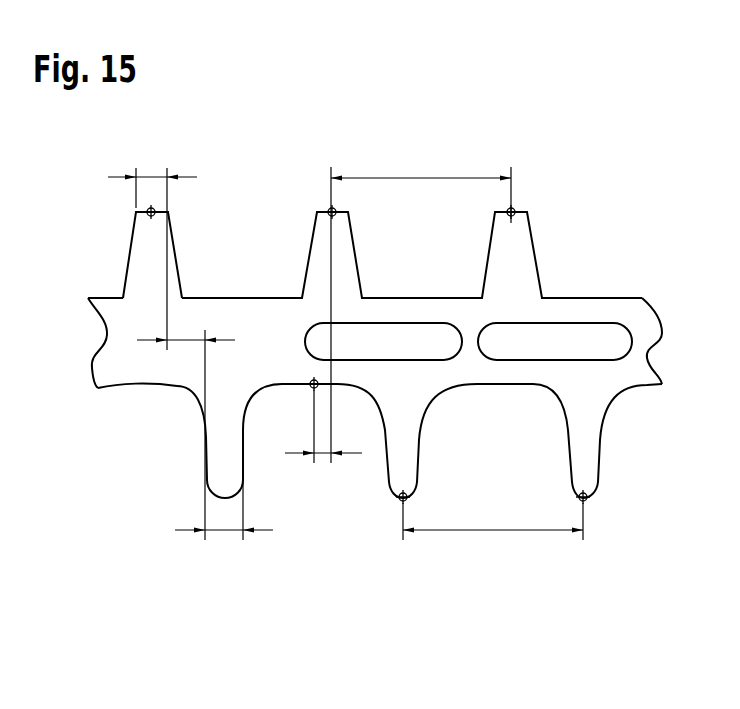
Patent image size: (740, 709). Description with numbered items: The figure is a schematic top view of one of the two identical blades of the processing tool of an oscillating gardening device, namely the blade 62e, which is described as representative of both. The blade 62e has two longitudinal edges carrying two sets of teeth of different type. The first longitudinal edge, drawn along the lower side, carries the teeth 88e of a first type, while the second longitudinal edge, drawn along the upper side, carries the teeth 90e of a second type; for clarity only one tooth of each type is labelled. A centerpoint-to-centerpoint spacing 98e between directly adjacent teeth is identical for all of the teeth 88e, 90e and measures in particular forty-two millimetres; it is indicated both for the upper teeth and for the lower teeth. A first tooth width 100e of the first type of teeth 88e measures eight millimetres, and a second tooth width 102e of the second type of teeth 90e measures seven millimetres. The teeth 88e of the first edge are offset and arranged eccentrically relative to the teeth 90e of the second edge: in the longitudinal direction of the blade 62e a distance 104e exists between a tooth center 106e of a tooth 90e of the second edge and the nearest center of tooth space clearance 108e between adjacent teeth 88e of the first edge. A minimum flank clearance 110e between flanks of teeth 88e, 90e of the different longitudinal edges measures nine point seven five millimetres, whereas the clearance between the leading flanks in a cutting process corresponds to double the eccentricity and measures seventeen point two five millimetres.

The blade 62e is at (407, 443).
The teeth of a first type 88e is at (225, 460).
The teeth of a second type 90e is at (148, 252).
The centerpoint-to-centerpoint spacing 98e is at (448, 178).
The first tooth width 100e is at (227, 532).
The second tooth width 102e is at (151, 207).
The distance 104e is at (325, 458).
The tooth center 106e is at (333, 211).
The center of tooth space clearance 108e is at (314, 383).
The minimum flank clearance 110e is at (187, 343).